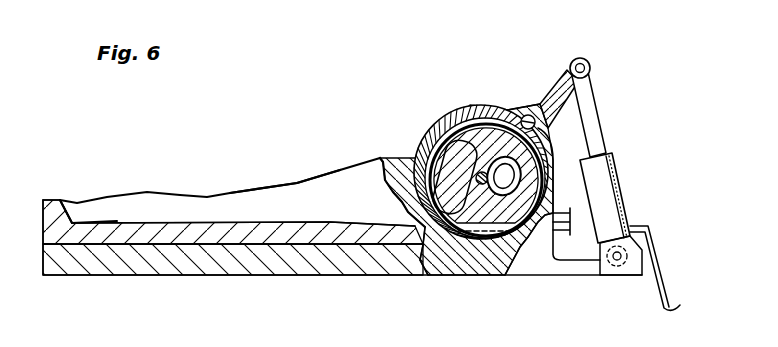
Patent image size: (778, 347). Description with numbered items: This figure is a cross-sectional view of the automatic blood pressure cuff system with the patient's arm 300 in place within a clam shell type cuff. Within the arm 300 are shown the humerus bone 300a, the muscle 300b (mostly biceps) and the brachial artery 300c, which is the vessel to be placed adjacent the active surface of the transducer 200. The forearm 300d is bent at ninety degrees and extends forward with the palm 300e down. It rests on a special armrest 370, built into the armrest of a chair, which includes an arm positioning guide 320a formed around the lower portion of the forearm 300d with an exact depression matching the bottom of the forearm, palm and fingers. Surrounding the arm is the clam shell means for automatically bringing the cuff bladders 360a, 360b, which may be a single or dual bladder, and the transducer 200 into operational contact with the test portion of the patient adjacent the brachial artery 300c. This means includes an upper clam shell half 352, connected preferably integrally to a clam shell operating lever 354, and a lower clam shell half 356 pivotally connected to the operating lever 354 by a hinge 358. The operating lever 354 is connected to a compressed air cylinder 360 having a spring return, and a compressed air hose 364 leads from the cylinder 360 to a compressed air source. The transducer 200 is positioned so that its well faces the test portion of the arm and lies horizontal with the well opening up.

The transducer 200 is at (483, 232).
The arm 300 is at (254, 187).
The humerus bone 300a is at (506, 157).
The muscle 300b is at (458, 148).
The brachial artery 300c is at (481, 172).
The forearm 300d is at (293, 186).
The palm 300e is at (120, 222).
The arm positioning guide 320a is at (295, 235).
The upper clam shell half 352 is at (417, 138).
The clam shell operating lever 354 is at (568, 70).
The lower clam shell half 356 is at (543, 187).
The hinge 358 is at (531, 128).
The compressed air cylinder 360 is at (615, 212).
The cuff bladder 360a is at (437, 270).
The cuff bladder 360b is at (418, 178).
The compressed air hose 364 is at (660, 295).
The armrest 370 is at (220, 262).